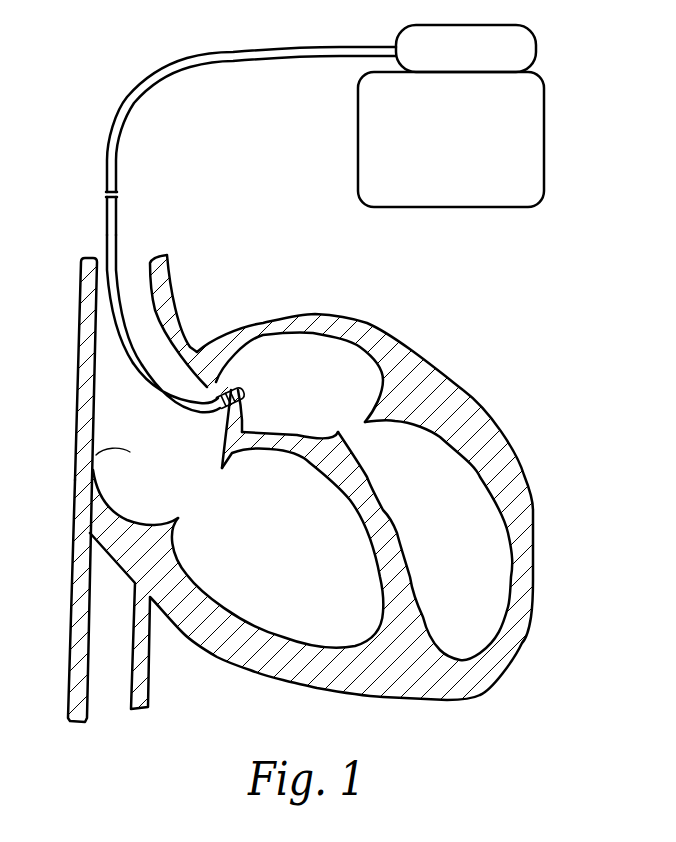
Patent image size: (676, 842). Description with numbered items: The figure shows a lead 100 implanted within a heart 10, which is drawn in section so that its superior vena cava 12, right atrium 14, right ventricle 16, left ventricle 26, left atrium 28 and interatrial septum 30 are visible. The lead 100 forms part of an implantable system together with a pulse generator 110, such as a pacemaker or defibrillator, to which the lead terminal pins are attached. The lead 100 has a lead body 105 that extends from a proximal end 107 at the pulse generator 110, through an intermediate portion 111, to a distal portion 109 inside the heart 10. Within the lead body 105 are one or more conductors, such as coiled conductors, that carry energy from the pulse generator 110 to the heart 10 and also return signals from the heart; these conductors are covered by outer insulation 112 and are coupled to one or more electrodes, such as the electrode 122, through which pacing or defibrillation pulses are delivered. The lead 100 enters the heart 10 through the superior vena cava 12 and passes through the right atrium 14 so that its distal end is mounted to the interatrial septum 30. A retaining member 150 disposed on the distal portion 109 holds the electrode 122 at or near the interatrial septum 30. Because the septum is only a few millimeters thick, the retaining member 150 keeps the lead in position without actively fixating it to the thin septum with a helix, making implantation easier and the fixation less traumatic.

The heart 10 is at (536, 518).
The superior vena cava 12 is at (100, 268).
The right atrium 14 is at (76, 460).
The right ventricle 16 is at (278, 575).
The left ventricle 26 is at (475, 547).
The left atrium 28 is at (323, 373).
The interatrial septum 30 is at (243, 422).
The lead 100 is at (90, 308).
The lead body 105 is at (117, 218).
The proximal end 107 is at (375, 47).
The distal portion 109 is at (210, 388).
The pulse generator 110 is at (546, 143).
The intermediate portion 111 is at (118, 285).
The outer insulation 112 is at (105, 206).
The electrode 122 is at (222, 410).
The retaining member 150 is at (236, 390).